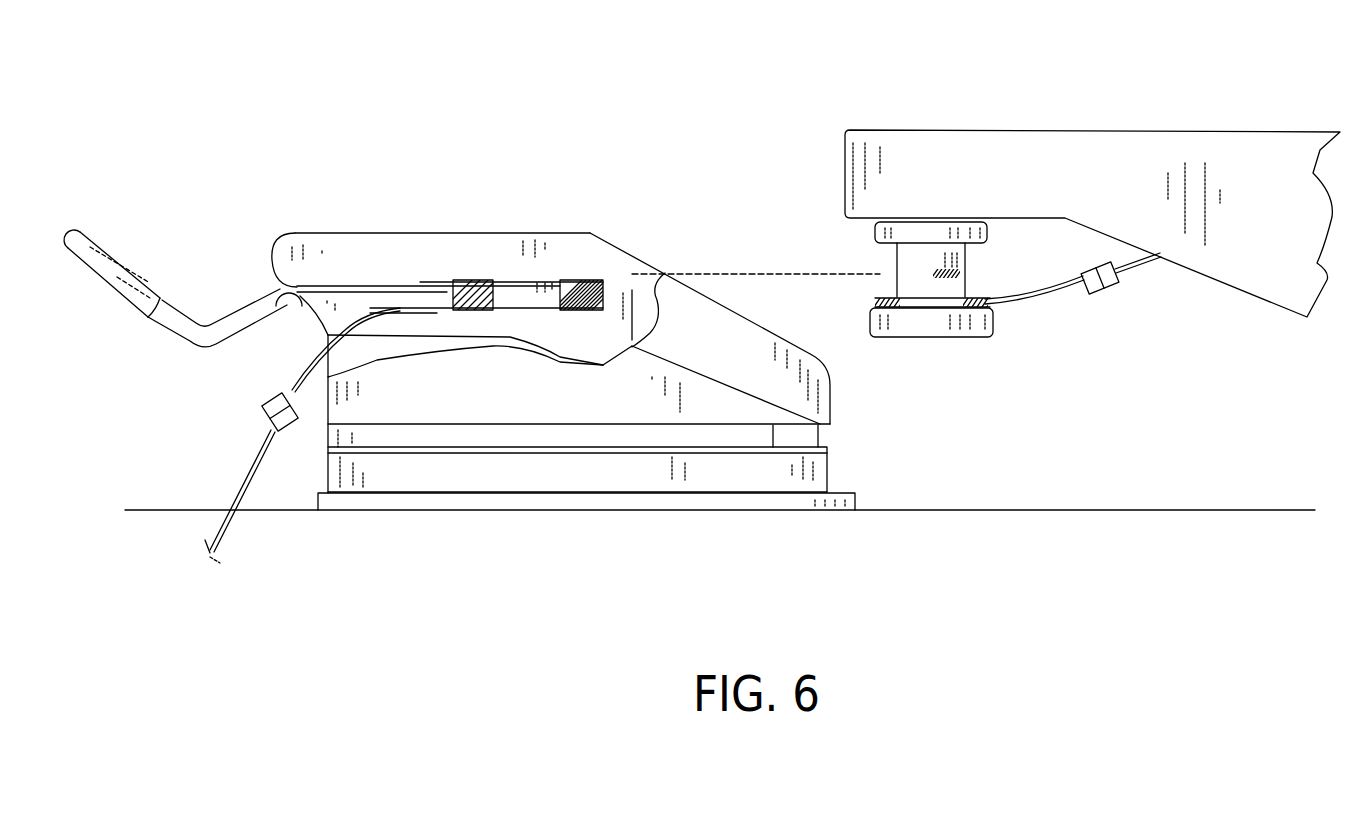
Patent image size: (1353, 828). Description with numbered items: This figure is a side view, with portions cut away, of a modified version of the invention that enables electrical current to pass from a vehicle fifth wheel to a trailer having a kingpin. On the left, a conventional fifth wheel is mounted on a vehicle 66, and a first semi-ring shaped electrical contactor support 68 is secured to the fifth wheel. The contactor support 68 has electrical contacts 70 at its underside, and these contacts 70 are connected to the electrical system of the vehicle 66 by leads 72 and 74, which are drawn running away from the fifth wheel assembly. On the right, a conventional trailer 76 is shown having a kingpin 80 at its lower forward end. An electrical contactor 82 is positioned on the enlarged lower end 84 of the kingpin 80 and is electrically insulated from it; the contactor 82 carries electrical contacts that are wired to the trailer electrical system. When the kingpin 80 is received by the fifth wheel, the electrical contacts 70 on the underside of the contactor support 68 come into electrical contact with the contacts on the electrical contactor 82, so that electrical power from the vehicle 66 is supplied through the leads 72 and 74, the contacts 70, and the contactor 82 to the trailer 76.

The vehicle 66 is at (463, 515).
The first semi-ring shaped electrical contactor support 68 is at (581, 278).
The electrical contacts 70 is at (590, 312).
The lead 72 is at (293, 367).
The lead 74 is at (253, 458).
The trailer 76 is at (1132, 126).
The kingpin 80 is at (967, 270).
The electrical contactor 82 is at (873, 297).
The enlarged lower end 84 is at (1073, 332).